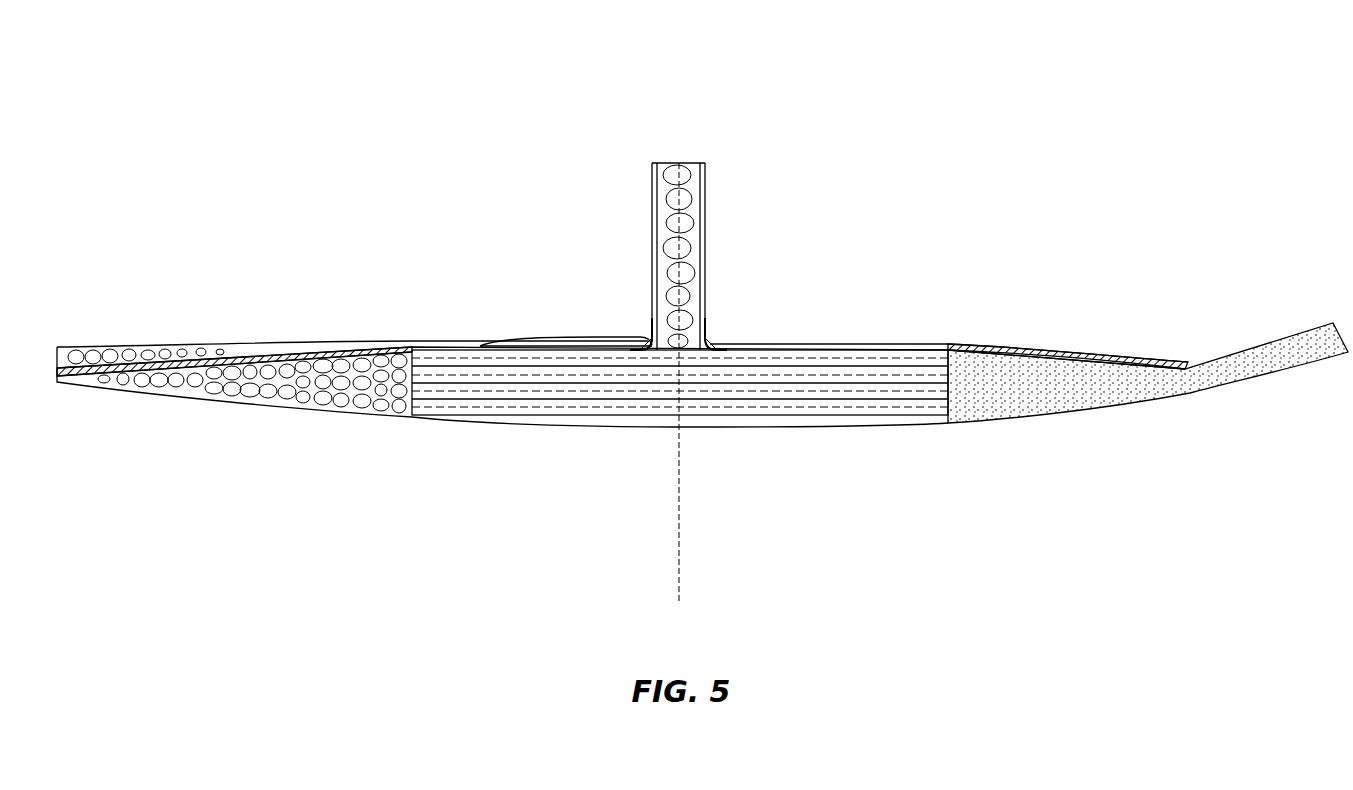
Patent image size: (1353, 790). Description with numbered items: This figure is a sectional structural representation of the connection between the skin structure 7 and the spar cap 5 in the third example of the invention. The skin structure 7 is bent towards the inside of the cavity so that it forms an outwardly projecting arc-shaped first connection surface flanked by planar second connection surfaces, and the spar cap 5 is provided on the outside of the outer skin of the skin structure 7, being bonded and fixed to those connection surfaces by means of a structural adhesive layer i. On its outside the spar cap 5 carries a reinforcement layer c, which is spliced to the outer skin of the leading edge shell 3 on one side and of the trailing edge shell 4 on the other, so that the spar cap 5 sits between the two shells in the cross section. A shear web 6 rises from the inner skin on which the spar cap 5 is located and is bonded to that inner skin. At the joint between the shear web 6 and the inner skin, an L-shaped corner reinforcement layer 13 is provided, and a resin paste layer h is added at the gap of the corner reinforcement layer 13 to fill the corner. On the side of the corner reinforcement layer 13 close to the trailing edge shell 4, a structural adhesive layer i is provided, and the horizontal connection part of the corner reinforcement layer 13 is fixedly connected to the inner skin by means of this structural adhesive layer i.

The leading edge shell 3 is at (1296, 347).
The trailing edge shell 4 is at (69, 349).
The spar cap 5 is at (750, 401).
The shear web 6 is at (681, 173).
The skin structure 7 is at (305, 350).
The corner reinforcement layer 13 is at (641, 305).
The structural adhesive layer i is at (483, 338).
The resin paste layer h is at (645, 343).
The reinforcement layer c is at (555, 428).